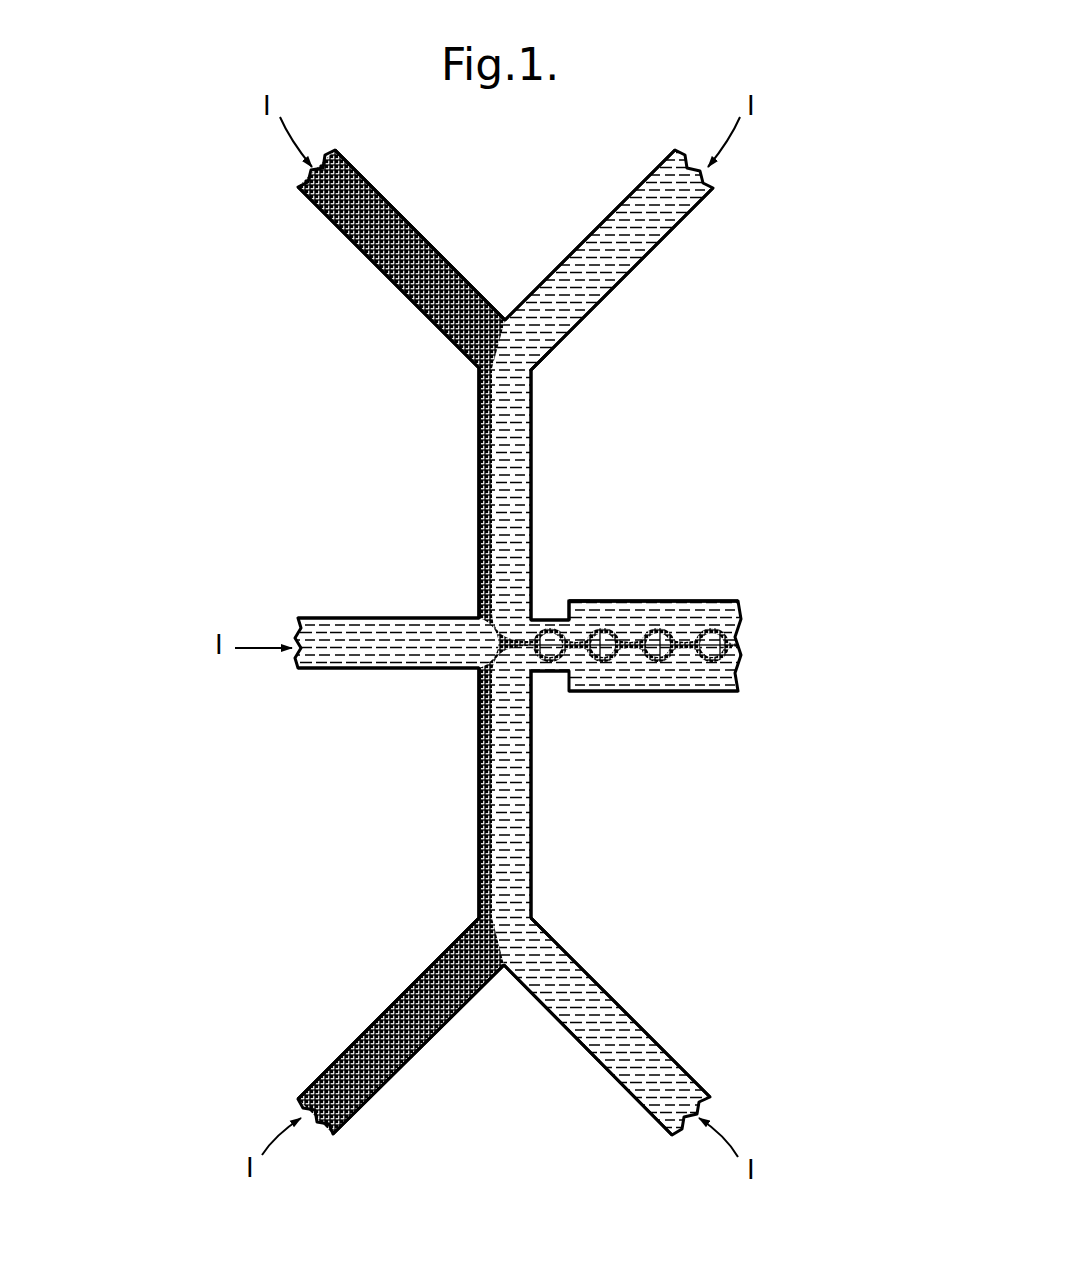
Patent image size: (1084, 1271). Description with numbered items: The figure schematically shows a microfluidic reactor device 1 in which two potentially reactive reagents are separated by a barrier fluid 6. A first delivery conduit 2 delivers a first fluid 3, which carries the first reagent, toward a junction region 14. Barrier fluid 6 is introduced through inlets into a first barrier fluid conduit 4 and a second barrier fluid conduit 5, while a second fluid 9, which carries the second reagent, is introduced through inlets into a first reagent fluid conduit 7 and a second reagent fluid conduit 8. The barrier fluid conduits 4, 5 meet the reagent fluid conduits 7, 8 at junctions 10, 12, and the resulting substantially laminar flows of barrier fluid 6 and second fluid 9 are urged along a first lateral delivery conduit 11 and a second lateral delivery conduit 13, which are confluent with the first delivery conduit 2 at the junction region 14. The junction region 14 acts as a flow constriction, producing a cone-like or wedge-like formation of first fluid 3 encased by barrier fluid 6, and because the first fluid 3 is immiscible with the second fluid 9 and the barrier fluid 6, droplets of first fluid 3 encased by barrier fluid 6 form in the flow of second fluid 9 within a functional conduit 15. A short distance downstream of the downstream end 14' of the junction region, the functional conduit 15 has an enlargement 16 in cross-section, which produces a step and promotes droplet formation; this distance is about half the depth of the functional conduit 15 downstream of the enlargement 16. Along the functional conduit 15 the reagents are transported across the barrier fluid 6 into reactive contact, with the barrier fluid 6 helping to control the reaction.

The reactor device 1 is at (344, 443).
The first delivery conduit 2 is at (340, 617).
The first fluid 3 is at (738, 663).
The first barrier fluid conduit 4 is at (343, 232).
The second barrier fluid conduit 5 is at (403, 985).
The barrier fluid 6 is at (397, 230).
The first reagent fluid conduit 7 is at (650, 263).
The second reagent fluid conduit 8 is at (655, 1033).
The second fluid 9 is at (594, 262).
The junction 10 is at (541, 365).
The first lateral delivery conduit 11 is at (533, 428).
The junction 12 is at (531, 917).
The second lateral delivery conduit 13 is at (478, 860).
The junction region 14 is at (557, 702).
The downstream end of the junction region 14' is at (566, 577).
The functional conduit 15 is at (630, 692).
The enlargement 16 is at (569, 600).